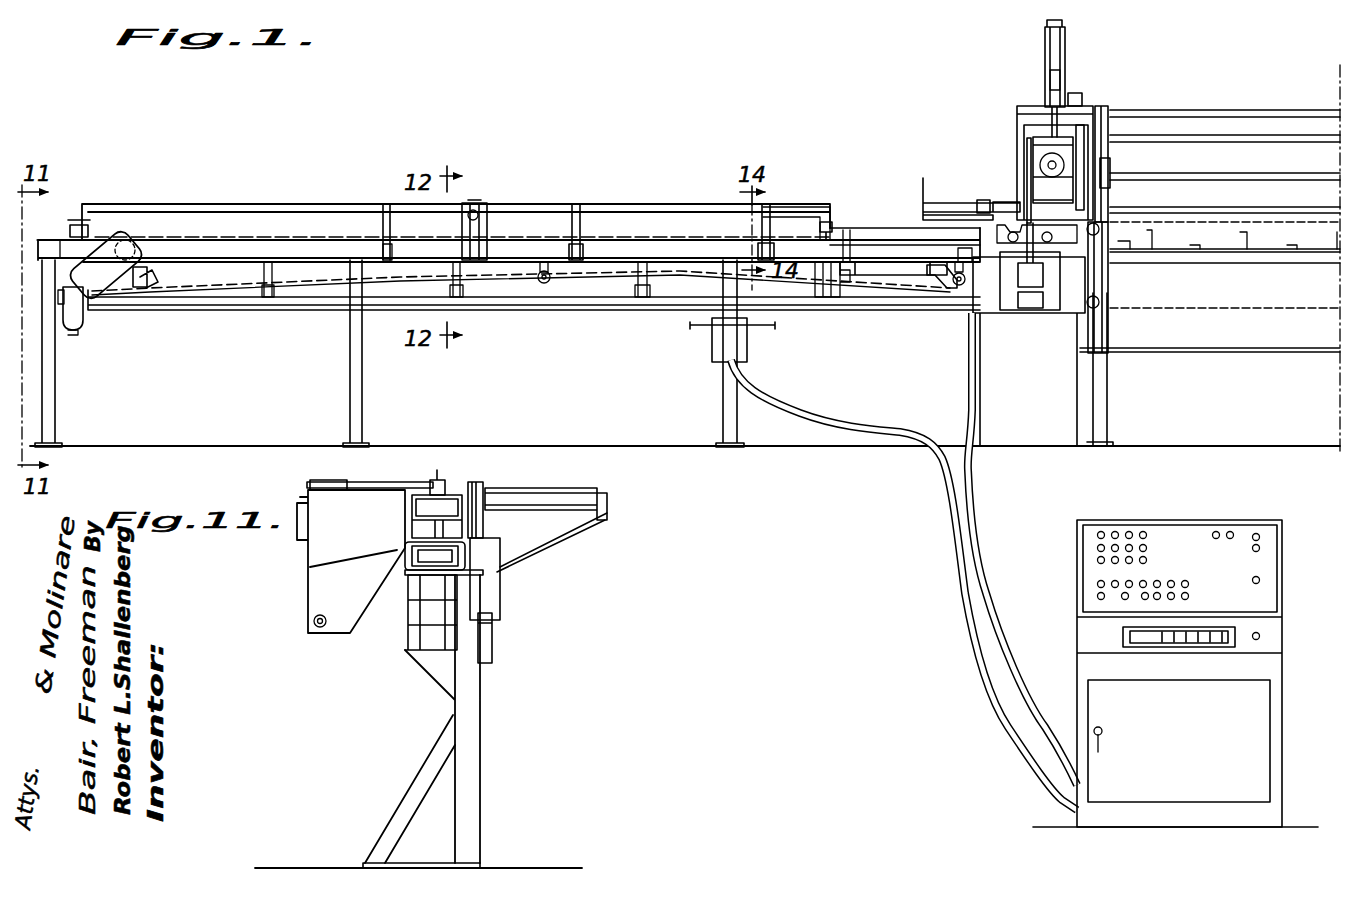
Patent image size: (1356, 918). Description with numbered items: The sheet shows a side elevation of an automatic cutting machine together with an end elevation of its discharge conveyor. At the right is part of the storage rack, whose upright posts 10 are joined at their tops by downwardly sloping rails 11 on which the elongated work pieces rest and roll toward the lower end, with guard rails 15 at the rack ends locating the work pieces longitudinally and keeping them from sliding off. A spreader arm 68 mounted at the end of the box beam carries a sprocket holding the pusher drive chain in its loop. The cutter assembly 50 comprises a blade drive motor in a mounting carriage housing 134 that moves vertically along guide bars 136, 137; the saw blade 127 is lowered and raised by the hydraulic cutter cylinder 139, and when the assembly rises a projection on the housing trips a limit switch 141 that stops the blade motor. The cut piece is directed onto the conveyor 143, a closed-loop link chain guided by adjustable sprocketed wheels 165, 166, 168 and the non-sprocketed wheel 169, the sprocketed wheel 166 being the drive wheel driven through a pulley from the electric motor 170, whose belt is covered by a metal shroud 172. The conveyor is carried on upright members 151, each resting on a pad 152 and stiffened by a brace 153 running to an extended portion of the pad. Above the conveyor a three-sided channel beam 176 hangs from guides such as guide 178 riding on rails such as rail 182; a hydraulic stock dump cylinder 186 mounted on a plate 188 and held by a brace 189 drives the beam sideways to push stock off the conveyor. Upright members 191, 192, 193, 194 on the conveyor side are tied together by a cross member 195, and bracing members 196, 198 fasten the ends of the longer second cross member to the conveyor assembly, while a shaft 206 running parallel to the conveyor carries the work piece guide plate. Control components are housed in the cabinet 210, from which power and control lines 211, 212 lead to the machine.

In FIG. 1, the upright posts 10 is at (1100, 412).
In FIG. 1, the downwardly sloping rails 11 is at (1104, 204).
In FIG. 1, the guard rails 15 is at (1085, 125).
In FIG. 1, the cutter assembly 50 is at (1052, 131).
In FIG. 1, the spreader arm 68 is at (1100, 283).
In FIG. 1, the saw blade 127 is at (1025, 207).
In FIG. 1, the mounting carriage housing 134 is at (1035, 165).
In FIG. 1, the guide bar 136 is at (1035, 128).
In FIG. 1, the guide bar 137 is at (1080, 125).
In FIG. 1, the cutter cylinder 139 is at (1045, 48).
In FIG. 1, the limit switch 141 is at (1098, 140).
In FIG. 1, the conveyor 143 is at (875, 287).
In FIG. 1, the upright members 151 is at (50, 417).
In FIG. 11, the upright members 151 is at (470, 785).
In FIG. 11, the pad 152 is at (440, 864).
In FIG. 11, the brace 153 is at (410, 788).
In FIG. 1, the adjustable sprocketed wheel 165 is at (142, 280).
In FIG. 1, the sprocketed drive wheel 166 is at (130, 240).
In FIG. 1, the sprocketed wheel and pulley 168 is at (940, 292).
In FIG. 1, the non-sprocketed wheel 169 is at (540, 284).
In FIG. 1, the electric motor 170 is at (80, 312).
In FIG. 11, the electric motor 170 is at (492, 646).
In FIG. 1, the metal shroud 172 is at (101, 252).
In FIG. 11, the metal shroud 172 is at (495, 596).
In FIG. 11, the channel beam 176 is at (410, 510).
In FIG. 11, the guide 178 is at (438, 482).
In FIG. 11, the rail 182 is at (372, 484).
In FIG. 11, the stock dump cylinder 186 is at (530, 492).
In FIG. 1, the plate 188 is at (482, 228).
In FIG. 11, the plate 188 is at (485, 528).
In FIG. 11, the brace 189 is at (530, 546).
In FIG. 1, the upright member 191 is at (382, 223).
In FIG. 1, the upright member 192 is at (393, 220).
In FIG. 1, the upright member 193 is at (580, 222).
In FIG. 1, the upright member 194 is at (768, 223).
In FIG. 1, the cross member 195 is at (654, 208).
In FIG. 1, the bracing member 196 is at (79, 218).
In FIG. 11, the bracing member 196 is at (308, 555).
In FIG. 1, the bracing member 198 is at (830, 222).
In FIG. 1, the shaft 206 is at (582, 298).
In FIG. 11, the shaft 206 is at (320, 628).
In FIG. 1, the cabinet 210 is at (1180, 516).
In FIG. 1, the power and control line 211 is at (983, 565).
In FIG. 1, the power and control line 212 is at (958, 598).